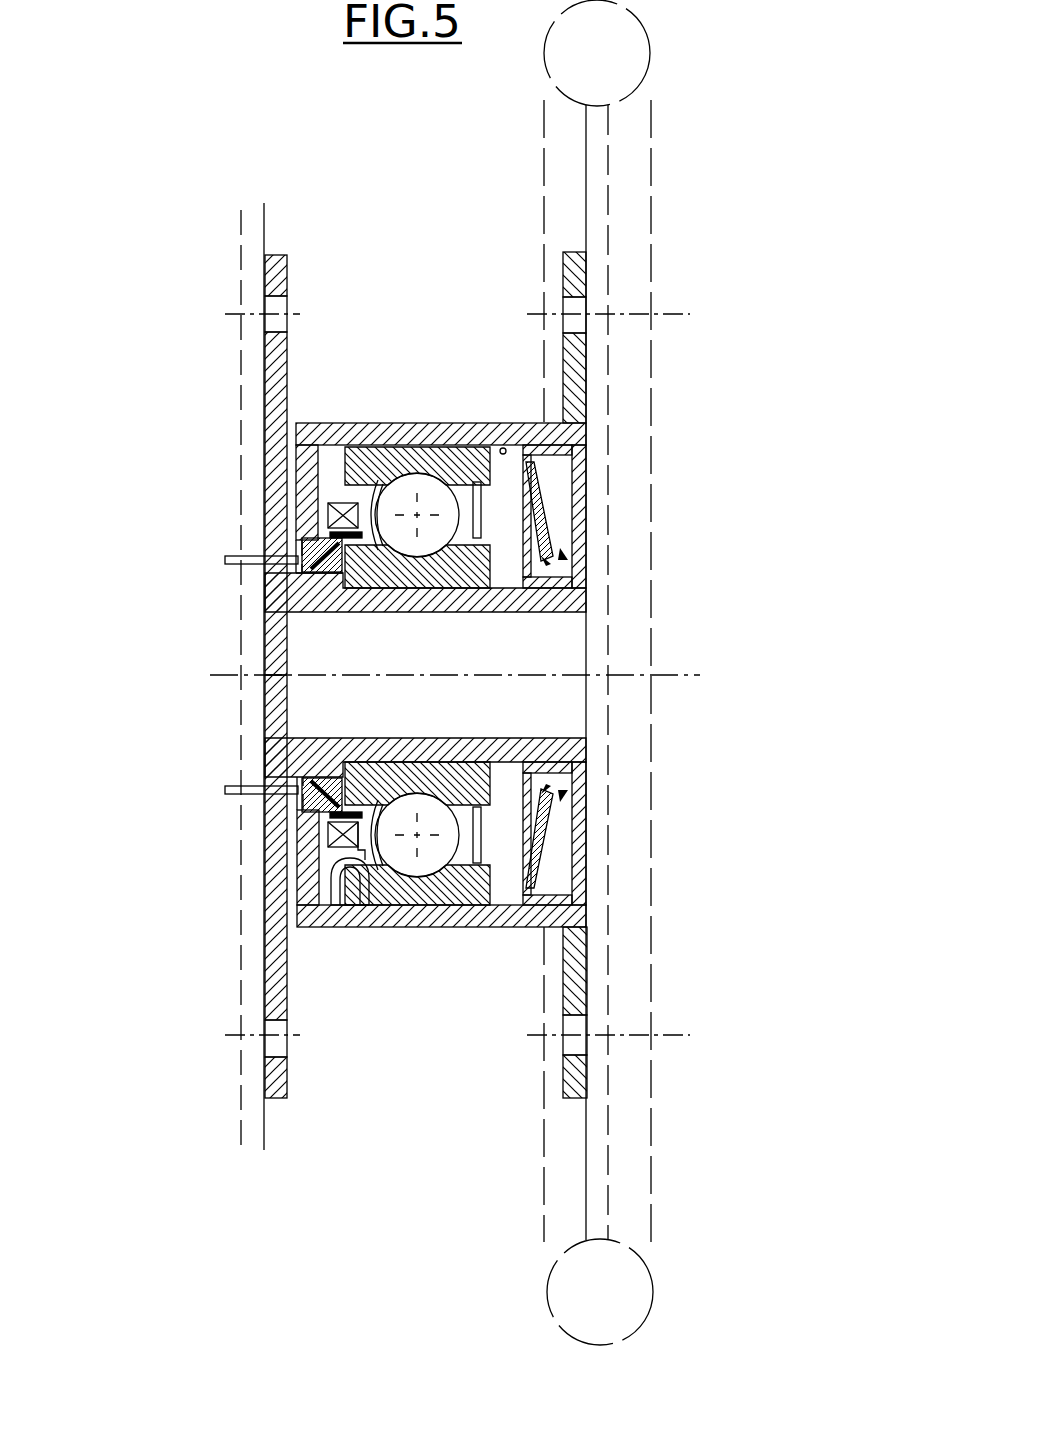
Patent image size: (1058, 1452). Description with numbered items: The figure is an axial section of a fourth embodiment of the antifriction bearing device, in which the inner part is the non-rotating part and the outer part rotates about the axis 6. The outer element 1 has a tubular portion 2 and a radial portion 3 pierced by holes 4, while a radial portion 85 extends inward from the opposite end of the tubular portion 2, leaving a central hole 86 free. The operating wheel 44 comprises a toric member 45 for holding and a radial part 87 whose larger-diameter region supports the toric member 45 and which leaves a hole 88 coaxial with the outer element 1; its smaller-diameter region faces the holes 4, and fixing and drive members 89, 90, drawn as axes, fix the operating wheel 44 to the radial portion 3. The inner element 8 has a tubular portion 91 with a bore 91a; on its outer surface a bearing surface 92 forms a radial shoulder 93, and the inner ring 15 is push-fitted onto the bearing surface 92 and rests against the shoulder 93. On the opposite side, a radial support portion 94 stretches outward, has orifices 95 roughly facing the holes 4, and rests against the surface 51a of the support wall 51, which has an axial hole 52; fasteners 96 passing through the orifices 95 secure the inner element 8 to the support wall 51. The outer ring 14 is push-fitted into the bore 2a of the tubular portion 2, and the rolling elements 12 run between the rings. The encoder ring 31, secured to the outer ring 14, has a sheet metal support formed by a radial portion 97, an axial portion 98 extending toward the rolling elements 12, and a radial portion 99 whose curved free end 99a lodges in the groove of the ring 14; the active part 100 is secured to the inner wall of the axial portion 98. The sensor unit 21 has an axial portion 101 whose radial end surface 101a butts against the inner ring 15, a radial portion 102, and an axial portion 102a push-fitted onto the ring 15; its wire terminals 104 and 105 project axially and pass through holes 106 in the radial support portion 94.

The outer element 1 is at (412, 416).
The tubular portion 2 is at (453, 423).
The bore 2a is at (513, 446).
The radial portion 3 is at (568, 275).
The holes 4 is at (560, 306).
The axis 6 is at (228, 675).
The inner element 8 is at (562, 626).
The rolling elements 12 is at (398, 500).
The outer ring 14 is at (352, 456).
The inner ring 15 is at (491, 788).
The sensor unit 21 is at (339, 549).
The encoder ring 31 is at (328, 841).
The operating wheel 44 is at (662, 35).
The toric member 45 is at (622, 77).
The support wall 51 is at (252, 232).
The surface 51a is at (264, 243).
The axial hole 52 is at (251, 713).
The radial portion 85 is at (306, 459).
The central hole 86 is at (286, 521).
The radial part 87 is at (596, 160).
The hole 88 is at (597, 413).
The fixing and drive member 89 is at (672, 314).
The fixing and drive member 90 is at (672, 1035).
The tubular portion 91 is at (575, 600).
The bore 91a is at (546, 738).
The bearing surface 92 is at (505, 566).
The radial shoulder 93 is at (341, 621).
The radial support portion 94 is at (276, 378).
The orifices 95 is at (267, 306).
The fasteners 96 is at (231, 315).
The radial portion 97 is at (340, 856).
The axial portion 98 is at (345, 876).
The radial portion 99 is at (338, 905).
The free end 99a is at (365, 892).
The active part 100 is at (327, 834).
The axial portion 101 is at (321, 576).
The radial end surface 101a is at (363, 586).
The radial portion 102 is at (316, 786).
The axial portion 102a is at (389, 534).
The wire terminal 104 is at (233, 558).
The wire terminal 105 is at (232, 791).
The holes 106 is at (301, 561).